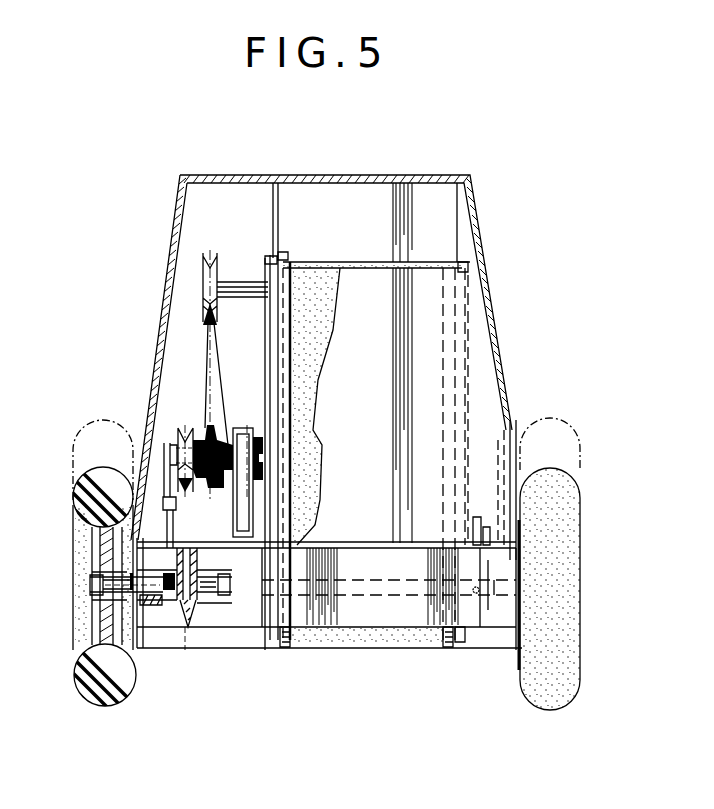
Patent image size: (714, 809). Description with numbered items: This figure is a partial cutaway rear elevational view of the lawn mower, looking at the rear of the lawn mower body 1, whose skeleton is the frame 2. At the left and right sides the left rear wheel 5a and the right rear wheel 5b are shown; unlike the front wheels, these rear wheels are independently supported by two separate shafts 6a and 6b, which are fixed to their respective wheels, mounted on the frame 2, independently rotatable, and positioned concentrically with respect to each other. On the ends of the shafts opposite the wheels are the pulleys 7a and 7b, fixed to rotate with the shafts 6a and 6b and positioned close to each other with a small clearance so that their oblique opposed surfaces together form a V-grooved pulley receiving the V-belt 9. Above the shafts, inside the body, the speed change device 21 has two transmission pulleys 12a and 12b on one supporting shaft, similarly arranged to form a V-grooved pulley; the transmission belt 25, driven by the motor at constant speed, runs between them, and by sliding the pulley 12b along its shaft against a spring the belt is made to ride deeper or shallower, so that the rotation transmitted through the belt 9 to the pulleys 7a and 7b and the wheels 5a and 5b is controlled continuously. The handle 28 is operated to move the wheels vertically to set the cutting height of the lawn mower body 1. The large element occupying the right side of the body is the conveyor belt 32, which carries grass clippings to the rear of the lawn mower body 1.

The lawn mower body 1 is at (486, 262).
The frame 2 is at (357, 553).
The left rear wheel 5a is at (76, 500).
The right rear wheel 5b is at (568, 502).
The left rear shaft 6a is at (102, 612).
The right rear shaft 6b is at (236, 595).
The pulley 7a is at (181, 610).
The pulley 7b is at (196, 612).
The V-belt 9 is at (180, 514).
The transmission pulley 12a is at (206, 424).
The transmission pulley 12b is at (226, 420).
The speed change device 21 is at (206, 398).
The transmission belt 25 is at (211, 362).
The handle 28 is at (512, 422).
The conveyor belt 32 is at (322, 268).